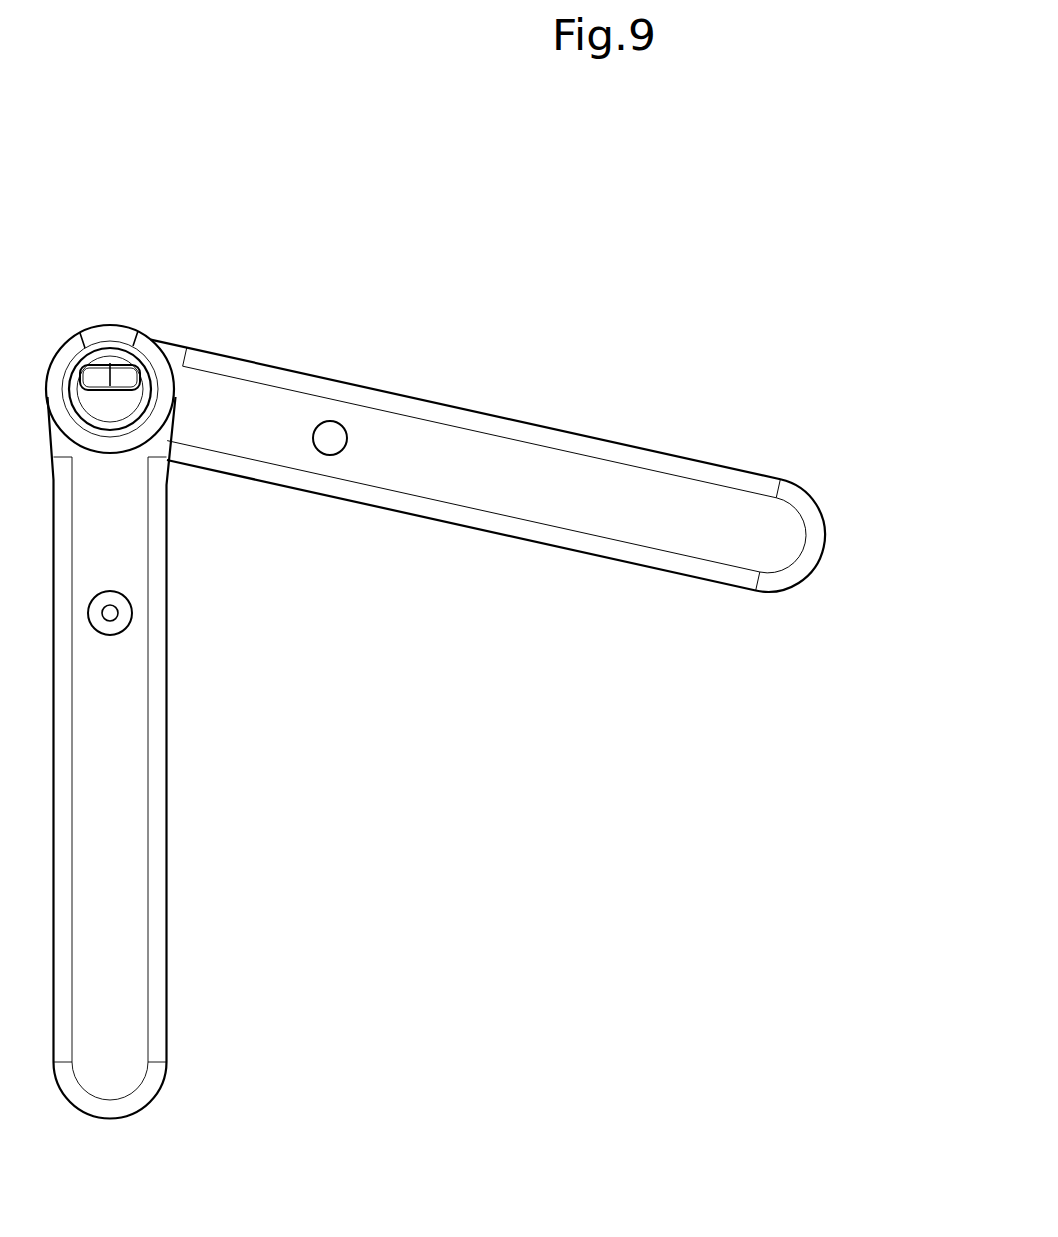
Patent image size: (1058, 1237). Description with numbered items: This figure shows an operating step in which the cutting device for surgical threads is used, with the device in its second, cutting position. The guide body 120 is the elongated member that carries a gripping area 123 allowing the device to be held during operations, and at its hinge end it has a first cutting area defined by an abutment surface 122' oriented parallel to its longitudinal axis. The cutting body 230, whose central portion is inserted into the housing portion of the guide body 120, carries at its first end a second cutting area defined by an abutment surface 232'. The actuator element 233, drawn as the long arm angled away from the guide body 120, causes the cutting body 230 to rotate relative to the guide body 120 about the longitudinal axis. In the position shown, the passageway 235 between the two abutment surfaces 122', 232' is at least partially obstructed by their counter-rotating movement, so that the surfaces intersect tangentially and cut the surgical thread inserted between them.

The guide body 120 is at (182, 805).
The gripping area 123 is at (117, 978).
The abutment surface 122' is at (230, 317).
The cutting body 230 is at (545, 555).
The actuator element 233 is at (622, 493).
The abutment surface 232' is at (184, 289).
The passageway 235 is at (97, 374).